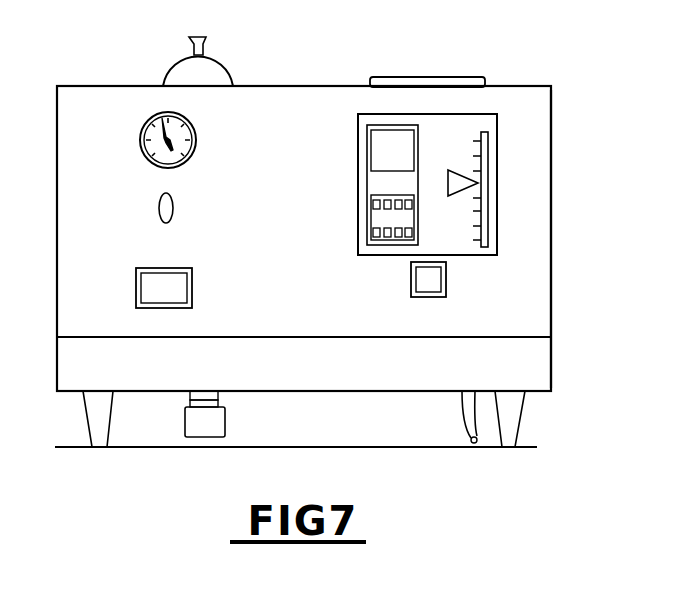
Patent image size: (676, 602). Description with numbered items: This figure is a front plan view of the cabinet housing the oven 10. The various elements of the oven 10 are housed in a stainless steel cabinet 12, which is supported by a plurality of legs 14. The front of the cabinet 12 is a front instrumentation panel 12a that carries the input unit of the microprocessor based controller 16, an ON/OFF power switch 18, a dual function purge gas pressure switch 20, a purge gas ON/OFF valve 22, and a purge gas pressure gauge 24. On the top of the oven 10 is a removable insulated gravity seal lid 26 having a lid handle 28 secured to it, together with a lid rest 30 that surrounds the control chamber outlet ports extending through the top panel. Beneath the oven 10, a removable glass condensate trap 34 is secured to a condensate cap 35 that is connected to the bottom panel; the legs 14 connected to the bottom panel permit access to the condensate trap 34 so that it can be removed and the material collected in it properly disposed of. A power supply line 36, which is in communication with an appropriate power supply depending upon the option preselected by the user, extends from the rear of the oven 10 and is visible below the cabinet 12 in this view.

The oven 10 is at (535, 72).
The cabinet 12 is at (552, 170).
The front instrumentation panel 12a is at (307, 297).
The legs 14 is at (522, 397).
The microprocessor based controller 16 is at (497, 133).
The ON/OFF power switch 18 is at (446, 272).
The dual function purge gas pressure switch 20 is at (178, 268).
The purge gas ON/OFF valve 22 is at (172, 194).
The purge gas pressure gauge 24 is at (197, 133).
The removable insulated gravity seal lid 26 is at (228, 70).
The lid handle 28 is at (200, 36).
The lid rest 30 is at (458, 78).
The removable glass condensate trap 34 is at (185, 425).
The condensate cap 35 is at (218, 400).
The power supply line 36 is at (460, 399).